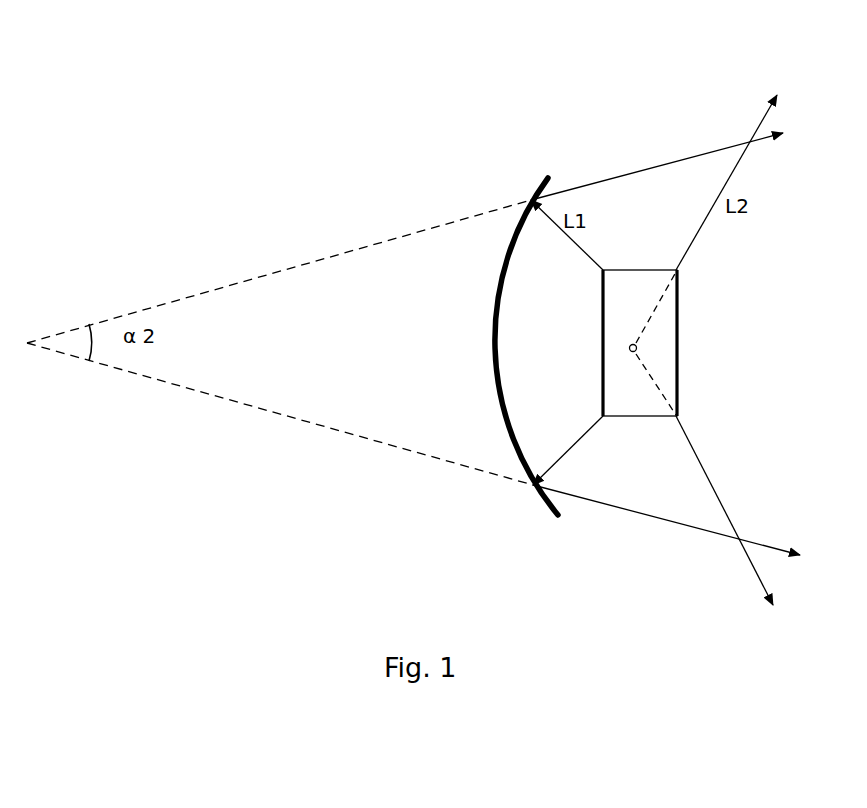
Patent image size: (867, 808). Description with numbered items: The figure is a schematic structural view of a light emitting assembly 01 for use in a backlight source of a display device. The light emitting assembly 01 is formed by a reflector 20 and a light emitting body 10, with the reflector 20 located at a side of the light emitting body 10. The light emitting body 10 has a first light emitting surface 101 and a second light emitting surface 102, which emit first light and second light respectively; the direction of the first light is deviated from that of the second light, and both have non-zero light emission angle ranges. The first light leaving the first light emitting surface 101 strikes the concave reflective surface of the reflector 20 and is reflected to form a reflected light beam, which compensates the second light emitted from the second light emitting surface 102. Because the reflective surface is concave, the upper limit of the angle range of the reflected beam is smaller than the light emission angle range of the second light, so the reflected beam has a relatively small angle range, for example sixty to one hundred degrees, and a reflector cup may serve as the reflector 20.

The light emitting assembly 01 is at (151, 57).
The light emitting body 10 is at (642, 449).
The first light emitting surface 101 is at (600, 351).
The second light emitting surface 102 is at (739, 376).
The reflector 20 is at (533, 498).